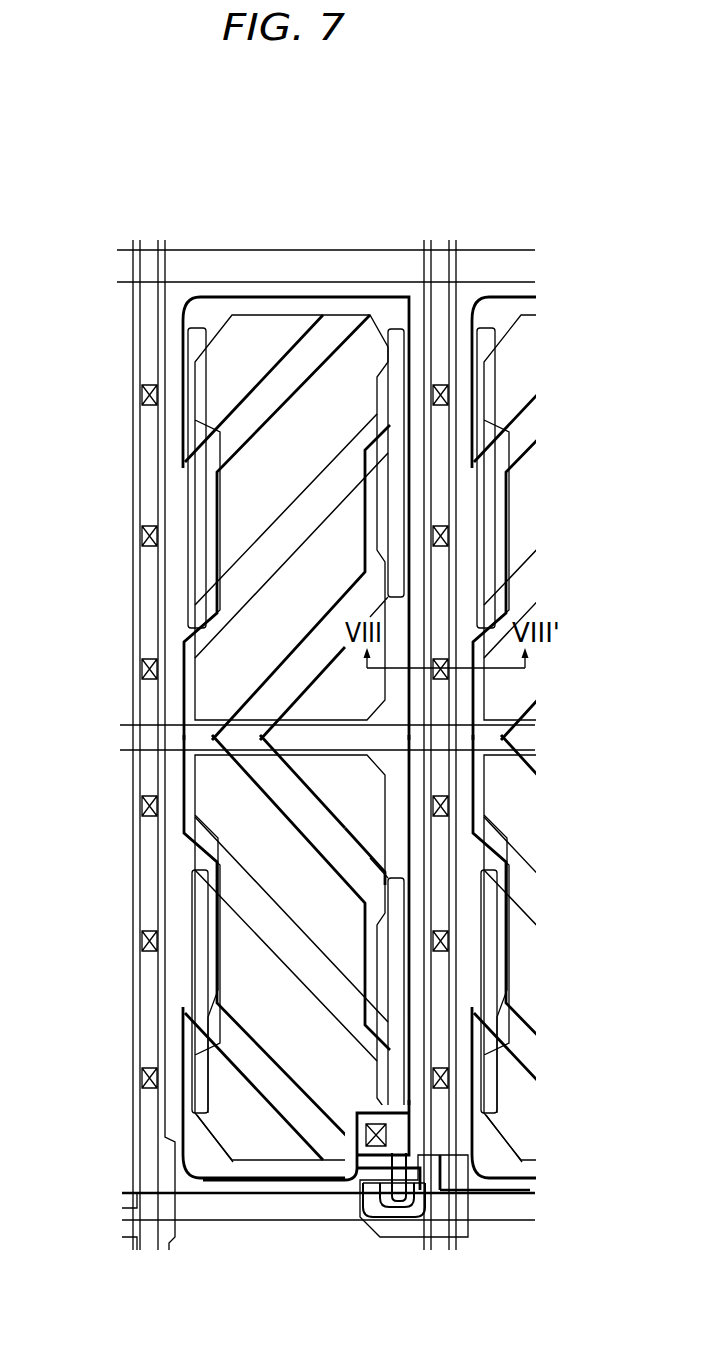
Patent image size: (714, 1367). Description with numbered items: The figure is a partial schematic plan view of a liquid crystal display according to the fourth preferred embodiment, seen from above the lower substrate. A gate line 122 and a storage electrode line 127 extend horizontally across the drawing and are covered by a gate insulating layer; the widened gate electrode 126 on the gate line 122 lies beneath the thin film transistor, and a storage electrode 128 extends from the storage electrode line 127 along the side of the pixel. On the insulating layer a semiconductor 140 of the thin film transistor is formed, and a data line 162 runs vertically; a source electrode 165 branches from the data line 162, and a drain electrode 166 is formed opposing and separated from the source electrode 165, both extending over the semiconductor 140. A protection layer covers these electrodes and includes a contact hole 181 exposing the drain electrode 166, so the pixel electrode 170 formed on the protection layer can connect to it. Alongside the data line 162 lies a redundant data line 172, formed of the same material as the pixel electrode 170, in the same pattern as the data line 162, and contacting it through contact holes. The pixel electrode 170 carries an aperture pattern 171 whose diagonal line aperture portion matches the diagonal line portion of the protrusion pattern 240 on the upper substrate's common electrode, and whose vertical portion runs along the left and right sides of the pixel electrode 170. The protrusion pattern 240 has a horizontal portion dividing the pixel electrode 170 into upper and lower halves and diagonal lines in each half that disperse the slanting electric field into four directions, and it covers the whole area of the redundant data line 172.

The gate line 122 is at (253, 1222).
The gate electrode 126 is at (530, 1183).
The storage electrode line 127 is at (148, 739).
The storage electrode 128 is at (192, 510).
The semiconductor 140 is at (467, 1232).
The data line 162 is at (150, 1003).
The source electrode 165 is at (363, 1220).
The drain electrode 166 is at (400, 1195).
The pixel electrode 170 is at (192, 1148).
The aperture pattern 171 is at (267, 1095).
The redundant data line 172 is at (135, 617).
The contact hole 181 is at (143, 803).
The protrusion pattern 240 is at (258, 940).